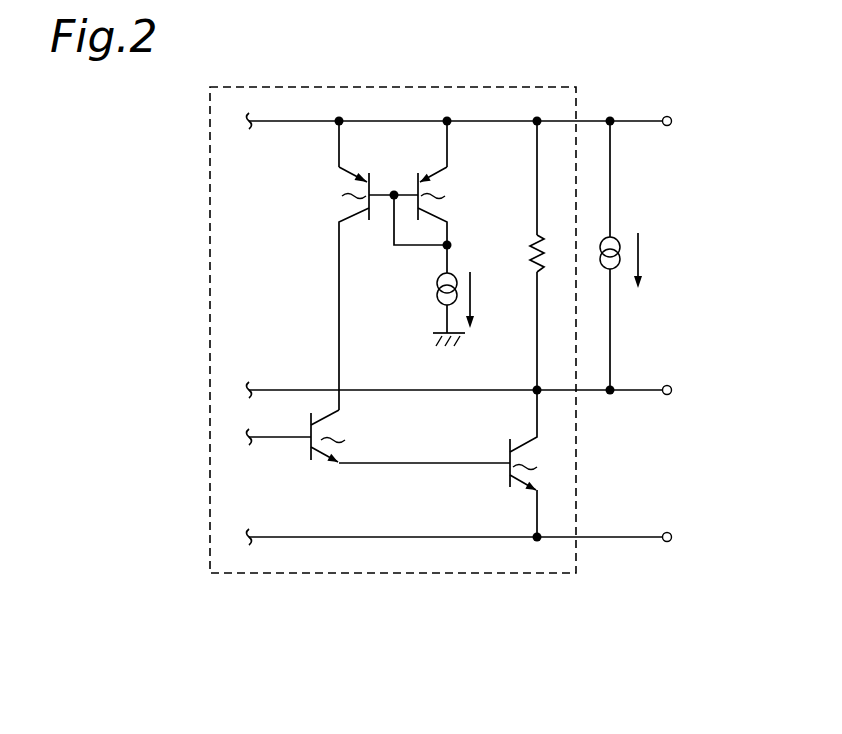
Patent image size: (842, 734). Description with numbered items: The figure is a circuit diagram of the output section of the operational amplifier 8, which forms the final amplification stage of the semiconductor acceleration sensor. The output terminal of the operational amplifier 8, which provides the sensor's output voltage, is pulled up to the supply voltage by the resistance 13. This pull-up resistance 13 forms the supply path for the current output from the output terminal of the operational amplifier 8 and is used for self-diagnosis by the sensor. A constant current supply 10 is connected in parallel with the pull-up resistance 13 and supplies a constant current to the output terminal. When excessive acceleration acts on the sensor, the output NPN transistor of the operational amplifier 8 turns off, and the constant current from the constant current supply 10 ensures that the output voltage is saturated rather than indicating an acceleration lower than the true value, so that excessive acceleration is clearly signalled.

The operational amplifier 8 is at (205, 244).
The constant current supply 10 is at (615, 239).
The resistance 13 is at (533, 247).